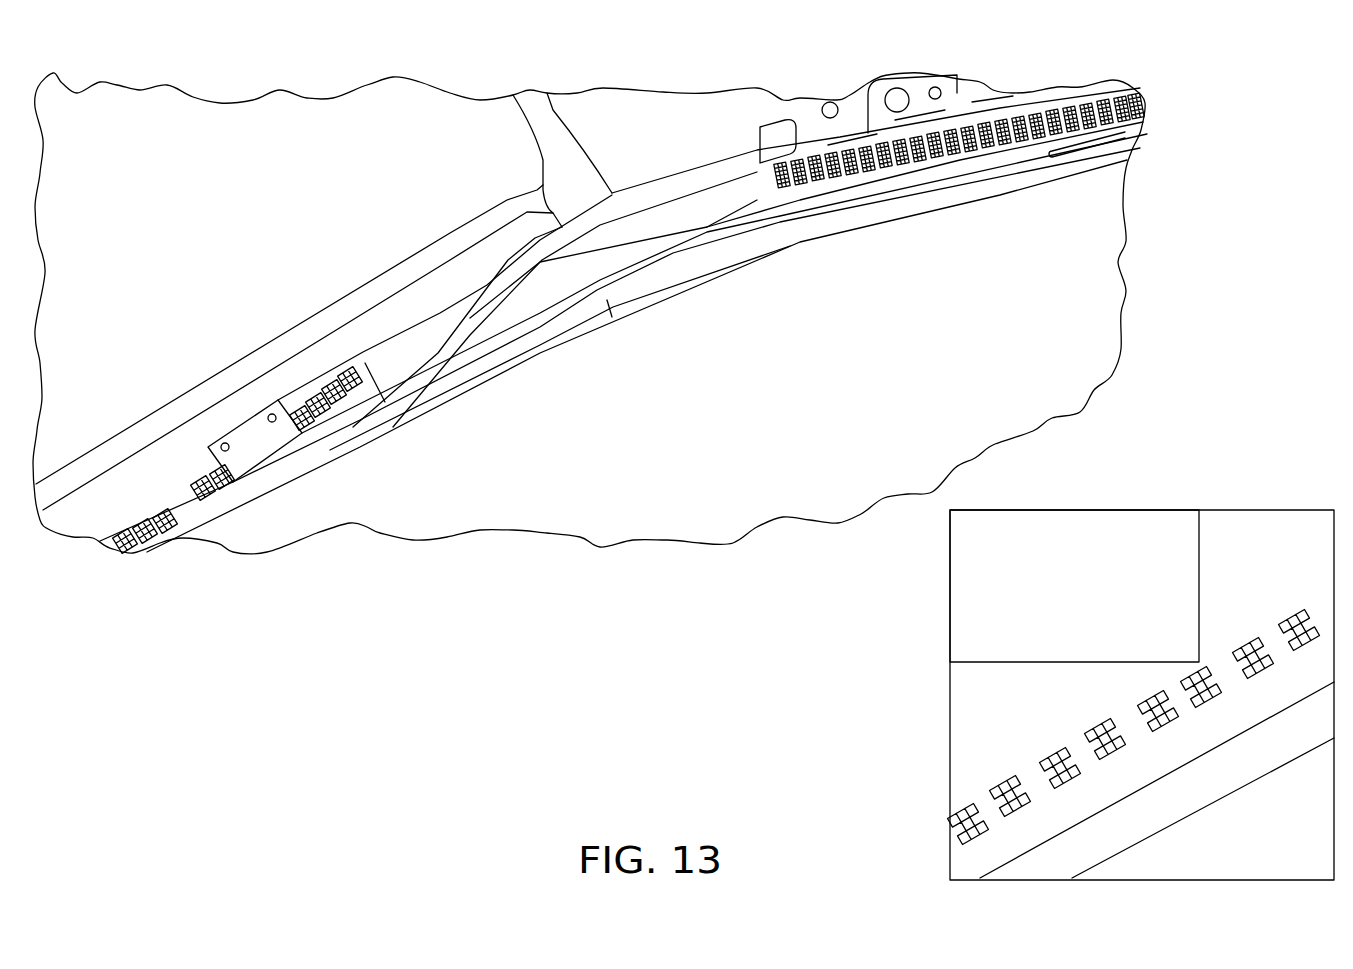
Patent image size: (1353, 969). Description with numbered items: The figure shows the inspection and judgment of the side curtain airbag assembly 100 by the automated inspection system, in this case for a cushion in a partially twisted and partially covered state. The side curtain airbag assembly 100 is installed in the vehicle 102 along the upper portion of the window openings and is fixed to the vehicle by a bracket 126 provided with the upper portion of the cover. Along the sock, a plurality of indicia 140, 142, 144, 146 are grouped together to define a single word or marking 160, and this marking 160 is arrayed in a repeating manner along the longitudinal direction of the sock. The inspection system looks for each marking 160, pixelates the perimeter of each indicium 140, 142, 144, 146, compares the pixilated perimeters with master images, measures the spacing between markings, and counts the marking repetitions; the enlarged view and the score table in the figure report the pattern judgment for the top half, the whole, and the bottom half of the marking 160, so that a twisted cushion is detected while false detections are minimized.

The side curtain airbag assembly 100 is at (540, 343).
The vehicle 102 is at (657, 125).
The bracket 126 is at (248, 438).
The indicium 140 is at (883, 160).
The indicium 142 is at (896, 158).
The indicium 144 is at (918, 156).
The indicium 146 is at (936, 156).
The marking 160 is at (1054, 456).